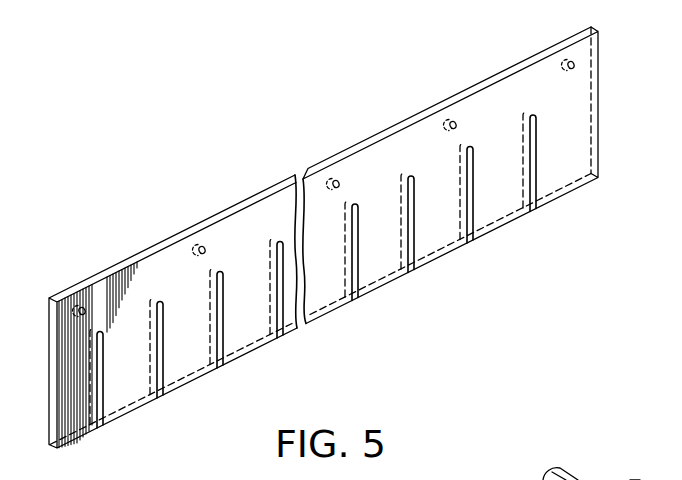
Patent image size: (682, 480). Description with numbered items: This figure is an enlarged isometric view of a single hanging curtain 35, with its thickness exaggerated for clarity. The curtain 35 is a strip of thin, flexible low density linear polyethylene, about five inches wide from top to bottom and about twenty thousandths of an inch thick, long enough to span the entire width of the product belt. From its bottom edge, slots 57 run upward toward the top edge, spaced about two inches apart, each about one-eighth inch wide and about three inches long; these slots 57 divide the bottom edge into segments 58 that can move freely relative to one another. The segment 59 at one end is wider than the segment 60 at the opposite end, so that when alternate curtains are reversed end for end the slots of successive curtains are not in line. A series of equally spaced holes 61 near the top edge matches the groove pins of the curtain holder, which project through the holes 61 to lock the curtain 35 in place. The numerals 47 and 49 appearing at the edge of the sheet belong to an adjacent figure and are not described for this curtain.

The curtain 35 is at (363, 142).
The slots 57 is at (415, 276).
The segments 58 is at (118, 384).
The segment at one end 59 is at (567, 168).
The segment at opposite end 60 is at (70, 415).
The holes 61 is at (457, 126).
The adjacent component (partial) 47 is at (580, 479).
The adjacent component (partial) 49 is at (634, 473).